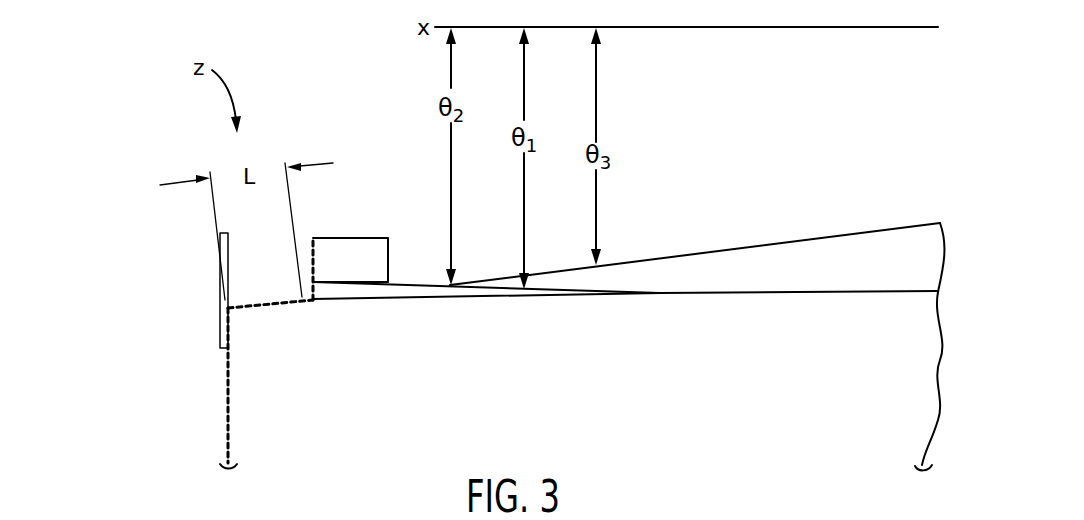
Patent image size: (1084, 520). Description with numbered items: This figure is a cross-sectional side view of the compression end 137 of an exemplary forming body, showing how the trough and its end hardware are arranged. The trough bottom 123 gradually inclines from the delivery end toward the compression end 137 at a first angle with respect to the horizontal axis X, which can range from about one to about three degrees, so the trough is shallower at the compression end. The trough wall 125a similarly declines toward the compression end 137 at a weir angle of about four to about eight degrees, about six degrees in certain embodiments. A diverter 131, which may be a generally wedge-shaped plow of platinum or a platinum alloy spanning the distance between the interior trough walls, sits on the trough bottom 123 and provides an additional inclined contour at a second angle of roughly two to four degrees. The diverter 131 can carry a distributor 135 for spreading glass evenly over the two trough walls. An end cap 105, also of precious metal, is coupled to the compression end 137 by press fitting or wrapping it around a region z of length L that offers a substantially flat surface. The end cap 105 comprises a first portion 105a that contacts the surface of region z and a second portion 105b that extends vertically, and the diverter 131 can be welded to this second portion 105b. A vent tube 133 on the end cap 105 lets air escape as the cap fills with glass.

The compression end 137 is at (140, 279).
The vent tube 133 is at (222, 303).
The end cap 105 is at (259, 353).
The first portion 105a is at (273, 311).
The second portion 105b is at (317, 263).
The distributor 135 is at (350, 238).
The diverter 131 is at (413, 283).
The trough wall 125a is at (788, 242).
The trough bottom 123 is at (628, 332).